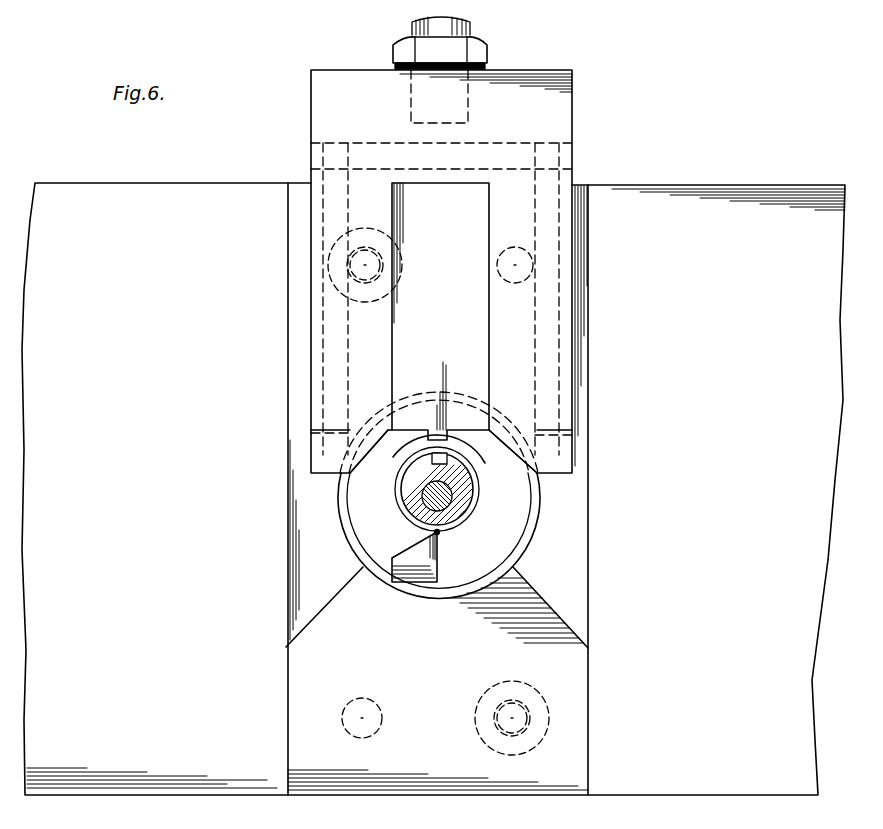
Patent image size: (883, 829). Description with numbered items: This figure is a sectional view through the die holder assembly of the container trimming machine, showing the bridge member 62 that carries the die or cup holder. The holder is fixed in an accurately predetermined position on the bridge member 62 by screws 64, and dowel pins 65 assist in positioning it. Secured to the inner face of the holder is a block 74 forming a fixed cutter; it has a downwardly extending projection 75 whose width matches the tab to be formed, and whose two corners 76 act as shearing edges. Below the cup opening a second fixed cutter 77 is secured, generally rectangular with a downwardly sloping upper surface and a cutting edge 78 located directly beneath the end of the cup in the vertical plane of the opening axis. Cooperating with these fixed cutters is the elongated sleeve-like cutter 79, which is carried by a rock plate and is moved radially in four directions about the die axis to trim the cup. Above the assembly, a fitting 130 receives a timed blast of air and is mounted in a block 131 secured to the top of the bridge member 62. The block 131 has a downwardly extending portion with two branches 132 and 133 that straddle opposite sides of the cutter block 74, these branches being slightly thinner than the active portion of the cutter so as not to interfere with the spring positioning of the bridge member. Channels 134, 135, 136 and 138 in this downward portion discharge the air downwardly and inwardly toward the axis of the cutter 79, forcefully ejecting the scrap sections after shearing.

The bridge member 62 is at (655, 203).
The screws 64 is at (330, 284).
The dowel pins 65 is at (530, 279).
The block 74 is at (465, 331).
The projection 75 is at (476, 459).
The corners 76 is at (401, 450).
The second fixed cutter 77 is at (424, 565).
The cutting edge 78 is at (440, 534).
The sleeve-like cutter 79 is at (437, 493).
The fitting 130 is at (480, 49).
The block 131 is at (555, 109).
The branch 132 is at (355, 345).
The branch 133 is at (525, 358).
The channel 134 is at (494, 159).
The channel 135 is at (342, 207).
The channel 136 is at (550, 228).
The channel 138 is at (470, 374).